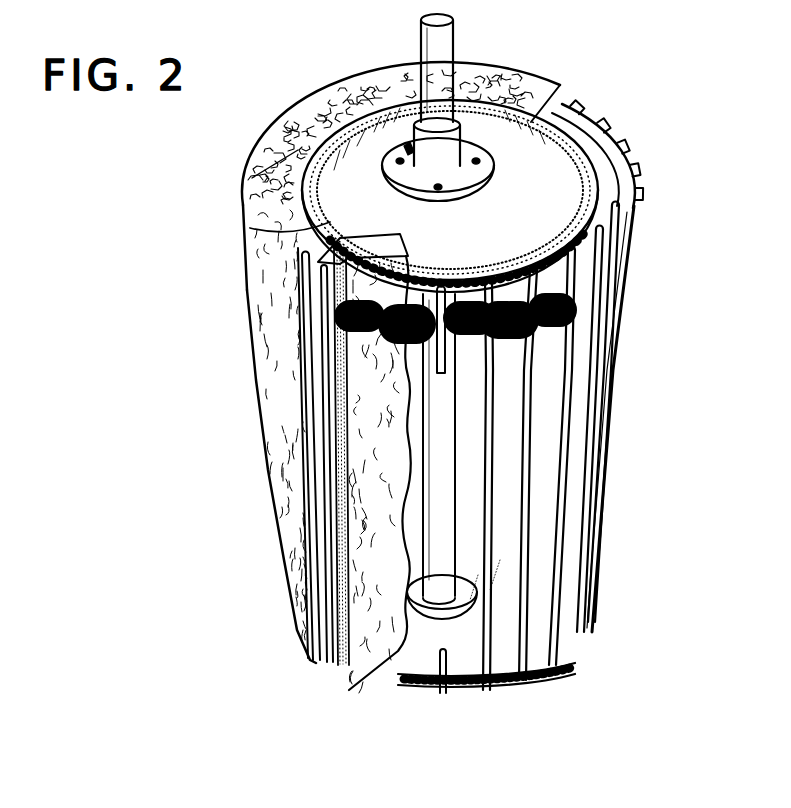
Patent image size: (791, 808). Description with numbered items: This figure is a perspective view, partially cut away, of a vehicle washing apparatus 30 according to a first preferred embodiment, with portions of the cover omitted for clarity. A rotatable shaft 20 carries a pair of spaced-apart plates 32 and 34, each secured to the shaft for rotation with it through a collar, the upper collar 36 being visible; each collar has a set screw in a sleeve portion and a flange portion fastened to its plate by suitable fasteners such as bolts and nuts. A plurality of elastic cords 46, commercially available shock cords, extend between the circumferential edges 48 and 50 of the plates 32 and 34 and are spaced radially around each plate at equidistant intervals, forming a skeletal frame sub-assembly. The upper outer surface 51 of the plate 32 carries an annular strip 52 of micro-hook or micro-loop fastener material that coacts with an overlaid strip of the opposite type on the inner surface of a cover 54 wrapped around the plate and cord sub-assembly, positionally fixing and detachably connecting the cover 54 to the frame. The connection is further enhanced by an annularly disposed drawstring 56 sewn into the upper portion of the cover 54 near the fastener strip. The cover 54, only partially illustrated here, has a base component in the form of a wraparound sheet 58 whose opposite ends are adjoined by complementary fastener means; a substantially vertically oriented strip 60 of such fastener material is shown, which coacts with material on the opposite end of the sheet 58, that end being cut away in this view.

The rotatable shaft 20 is at (455, 40).
The vehicle washing apparatus 30 is at (605, 83).
The plate 32 is at (618, 127).
The plate 34 is at (498, 685).
The collar 36 is at (473, 128).
The elastic cords 46 is at (613, 385).
The circumferential edge 48 is at (595, 245).
The circumferential edge 50 is at (460, 693).
The upper (outer) surface 51 is at (495, 227).
The annular strip 52 is at (437, 262).
The cover 54 is at (255, 142).
The drawstring 56 is at (380, 74).
The wraparound sheet 58 is at (285, 515).
The strip of complementary fastener material 60 is at (347, 395).